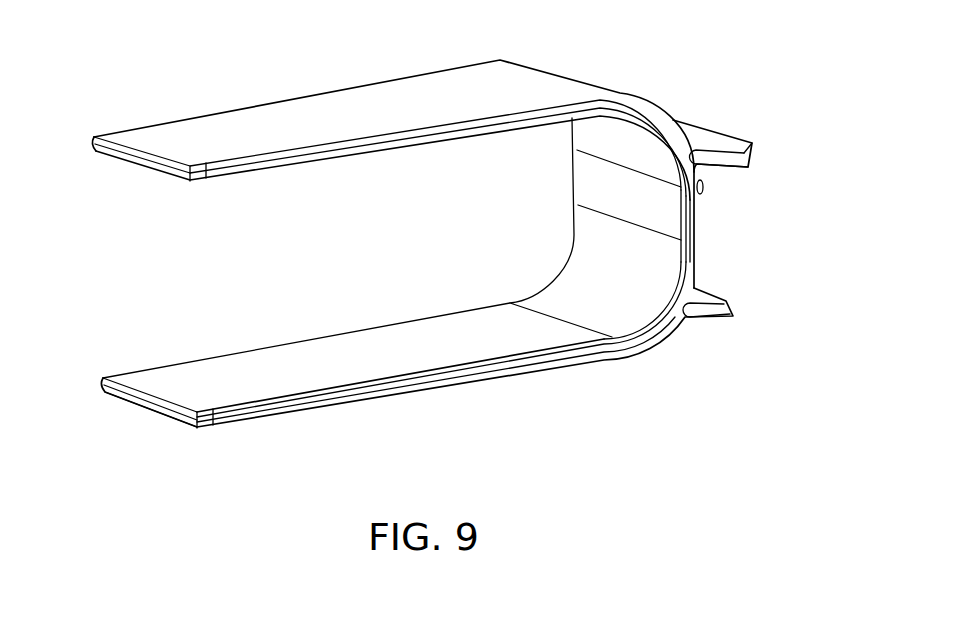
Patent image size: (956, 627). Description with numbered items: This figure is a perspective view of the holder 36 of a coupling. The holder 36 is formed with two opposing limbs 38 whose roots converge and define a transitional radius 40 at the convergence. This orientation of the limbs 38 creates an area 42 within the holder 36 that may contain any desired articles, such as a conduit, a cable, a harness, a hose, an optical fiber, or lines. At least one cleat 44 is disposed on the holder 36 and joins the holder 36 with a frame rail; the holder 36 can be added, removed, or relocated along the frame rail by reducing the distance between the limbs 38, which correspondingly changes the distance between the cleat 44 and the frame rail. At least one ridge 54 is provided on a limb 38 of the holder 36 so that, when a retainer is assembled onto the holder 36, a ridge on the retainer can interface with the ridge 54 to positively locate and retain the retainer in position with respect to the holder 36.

The holder 36 is at (422, 240).
The limbs 38 is at (412, 255).
The transitional radius 40 is at (580, 288).
The area 42 is at (376, 281).
The cleat 44 is at (697, 133).
The ridge 54 is at (320, 172).